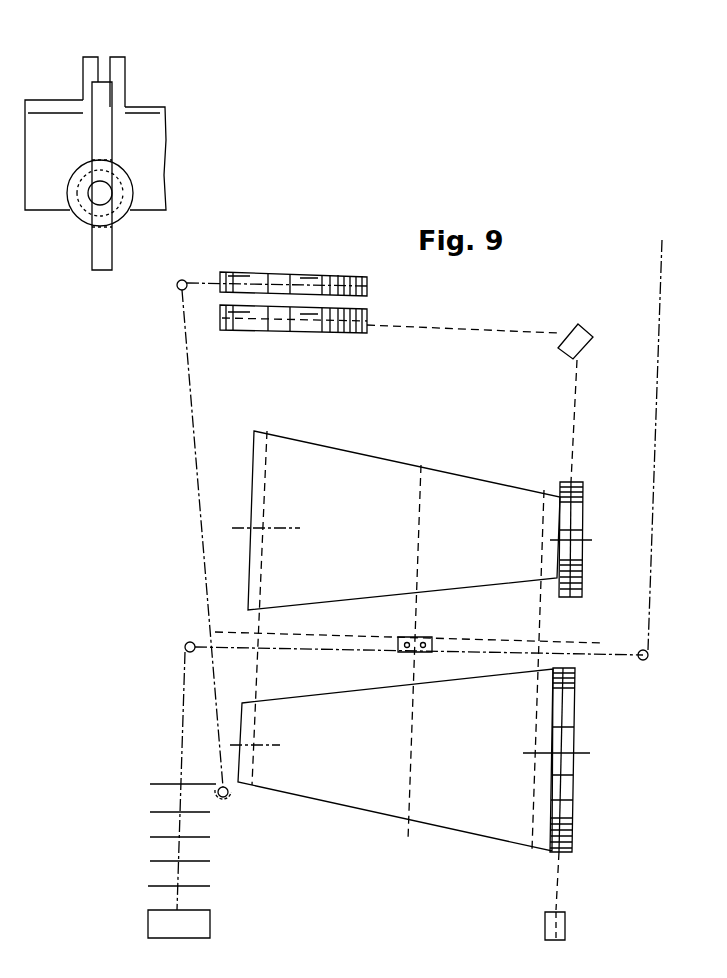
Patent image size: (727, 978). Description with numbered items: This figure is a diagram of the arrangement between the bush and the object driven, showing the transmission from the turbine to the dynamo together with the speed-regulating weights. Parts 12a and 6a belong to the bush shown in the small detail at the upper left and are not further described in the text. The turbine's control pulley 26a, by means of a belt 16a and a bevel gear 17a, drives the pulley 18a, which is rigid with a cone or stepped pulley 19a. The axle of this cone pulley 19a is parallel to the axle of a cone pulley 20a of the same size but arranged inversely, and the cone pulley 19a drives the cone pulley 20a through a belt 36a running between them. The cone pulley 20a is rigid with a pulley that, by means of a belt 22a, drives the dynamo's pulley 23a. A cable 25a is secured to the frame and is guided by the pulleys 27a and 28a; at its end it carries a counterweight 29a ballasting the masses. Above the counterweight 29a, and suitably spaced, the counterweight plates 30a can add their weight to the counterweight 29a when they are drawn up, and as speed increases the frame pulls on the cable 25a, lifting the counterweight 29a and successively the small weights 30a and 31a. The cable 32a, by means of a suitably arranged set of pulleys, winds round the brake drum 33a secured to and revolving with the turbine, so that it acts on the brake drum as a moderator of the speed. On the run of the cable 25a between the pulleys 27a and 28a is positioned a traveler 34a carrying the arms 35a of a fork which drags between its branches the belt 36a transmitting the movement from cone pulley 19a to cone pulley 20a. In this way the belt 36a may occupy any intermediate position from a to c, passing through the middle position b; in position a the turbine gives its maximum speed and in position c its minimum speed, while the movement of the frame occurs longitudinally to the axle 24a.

The shaft arms 12a is at (116, 60).
The pivot rod 6a is at (103, 105).
The brake drum 33a is at (263, 272).
The turbine's control pulley 26a is at (250, 323).
The cable 32a is at (197, 495).
The belt 16a is at (422, 326).
The bevel gear 17a is at (580, 340).
The cable 25a is at (658, 365).
The cone pulley 19a is at (396, 520).
The position c is at (266, 476).
The axis b' b is at (421, 510).
The belt 36a is at (441, 544).
The position a is at (543, 522).
The pulley 18a is at (573, 521).
The pulley 28a is at (185, 646).
The pulley 27a is at (646, 660).
The traveler 34a is at (400, 653).
The arms of the fork 35a is at (424, 653).
The cone pulley 20a is at (391, 760).
The axle 24a is at (566, 727).
The belt 22a is at (560, 882).
The dynamo's pulley 23a is at (565, 930).
The small weight 31a is at (218, 786).
The counterweight plates 30a is at (195, 844).
The counterweight 29a is at (179, 926).